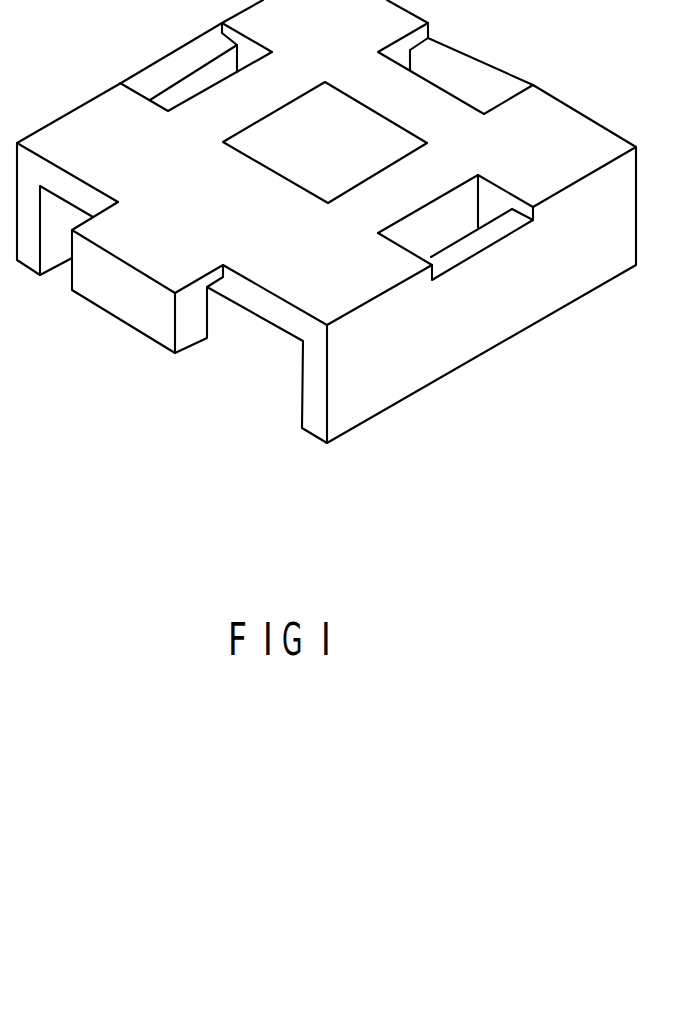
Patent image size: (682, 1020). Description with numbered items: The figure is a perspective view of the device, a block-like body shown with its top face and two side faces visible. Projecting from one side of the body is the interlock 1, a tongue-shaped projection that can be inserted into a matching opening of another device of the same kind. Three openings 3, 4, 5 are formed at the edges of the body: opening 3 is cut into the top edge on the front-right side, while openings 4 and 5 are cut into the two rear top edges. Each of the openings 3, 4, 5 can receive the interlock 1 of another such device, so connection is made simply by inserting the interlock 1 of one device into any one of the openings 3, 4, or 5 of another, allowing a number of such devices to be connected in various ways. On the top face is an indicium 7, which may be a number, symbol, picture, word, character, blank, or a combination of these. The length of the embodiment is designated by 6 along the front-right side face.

The interlock 1 is at (118, 305).
The opening 3 is at (487, 207).
The opening 4 is at (403, 55).
The opening 5 is at (175, 97).
The length of the embodiment 6 is at (483, 352).
The indicium 7 is at (283, 157).